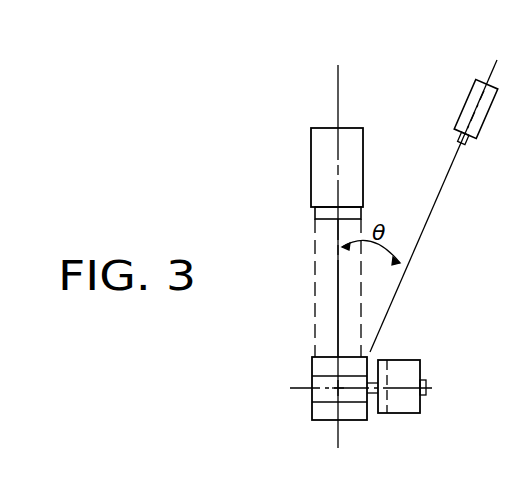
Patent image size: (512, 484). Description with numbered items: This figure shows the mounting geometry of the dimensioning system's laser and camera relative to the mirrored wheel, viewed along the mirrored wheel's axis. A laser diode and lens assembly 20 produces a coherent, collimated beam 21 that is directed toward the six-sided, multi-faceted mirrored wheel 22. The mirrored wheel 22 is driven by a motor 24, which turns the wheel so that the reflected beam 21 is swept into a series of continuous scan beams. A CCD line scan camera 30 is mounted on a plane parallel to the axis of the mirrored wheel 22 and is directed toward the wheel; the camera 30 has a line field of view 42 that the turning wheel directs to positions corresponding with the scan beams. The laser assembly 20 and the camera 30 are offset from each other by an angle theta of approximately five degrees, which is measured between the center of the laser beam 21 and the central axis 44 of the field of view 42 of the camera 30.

The laser diode and lens assembly 20 is at (465, 105).
The collimated beam 21 is at (446, 178).
The mirrored wheel 22 is at (312, 366).
The motor 24 is at (418, 366).
The CCD line scan camera 30 is at (311, 137).
The line field of view 42 is at (361, 305).
The central axis 44 is at (338, 336).